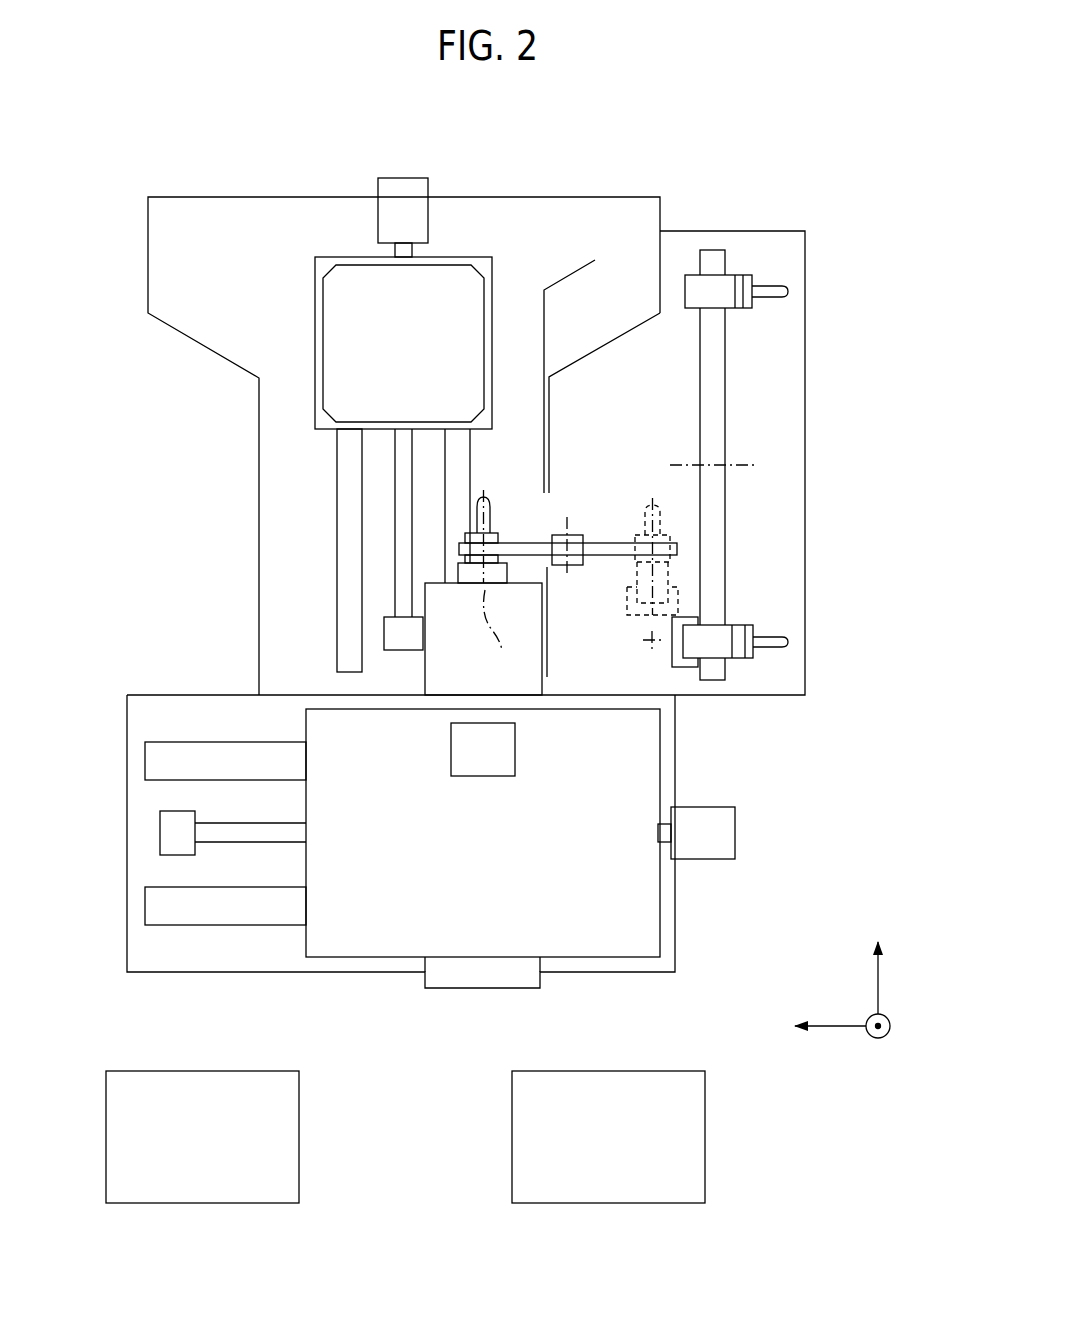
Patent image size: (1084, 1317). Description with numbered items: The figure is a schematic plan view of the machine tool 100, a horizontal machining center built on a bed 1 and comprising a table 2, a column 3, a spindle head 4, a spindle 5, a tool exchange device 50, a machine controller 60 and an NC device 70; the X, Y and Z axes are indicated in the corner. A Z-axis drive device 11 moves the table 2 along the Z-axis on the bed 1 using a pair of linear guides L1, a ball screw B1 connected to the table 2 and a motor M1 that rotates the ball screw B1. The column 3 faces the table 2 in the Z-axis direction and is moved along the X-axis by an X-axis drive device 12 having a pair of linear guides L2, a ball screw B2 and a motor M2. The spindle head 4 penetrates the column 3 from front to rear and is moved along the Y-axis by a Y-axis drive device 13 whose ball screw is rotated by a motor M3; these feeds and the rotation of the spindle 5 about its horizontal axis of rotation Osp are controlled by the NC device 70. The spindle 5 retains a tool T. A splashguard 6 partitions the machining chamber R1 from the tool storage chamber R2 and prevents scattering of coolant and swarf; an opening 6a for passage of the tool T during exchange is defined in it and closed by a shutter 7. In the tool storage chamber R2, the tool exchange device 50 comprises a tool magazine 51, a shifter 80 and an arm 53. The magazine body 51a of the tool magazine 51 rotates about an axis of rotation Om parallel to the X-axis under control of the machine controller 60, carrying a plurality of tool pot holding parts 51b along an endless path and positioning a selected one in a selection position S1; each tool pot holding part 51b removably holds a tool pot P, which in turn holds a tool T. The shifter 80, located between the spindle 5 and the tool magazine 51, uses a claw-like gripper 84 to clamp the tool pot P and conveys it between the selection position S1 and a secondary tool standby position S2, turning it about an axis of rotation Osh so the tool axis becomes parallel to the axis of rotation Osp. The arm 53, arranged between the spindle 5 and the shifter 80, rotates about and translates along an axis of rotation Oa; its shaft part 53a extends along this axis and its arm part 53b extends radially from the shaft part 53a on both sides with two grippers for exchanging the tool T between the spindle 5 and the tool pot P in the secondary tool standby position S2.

The machine tool 100 is at (107, 169).
The bed 1 is at (245, 338).
The table 2 is at (350, 306).
The column 3 is at (348, 937).
The spindle head 4 is at (437, 663).
The spindle 5 is at (460, 572).
The splashguard 6 is at (625, 333).
The opening 6a is at (556, 490).
The shutter 7 is at (555, 288).
The Z-axis drive device 11 is at (410, 172).
The X-axis drive device 12 is at (771, 783).
The Y-axis drive device 13 is at (444, 798).
The tool exchange device 50 is at (838, 692).
The tool magazine 51 is at (781, 465).
The magazine body 51a is at (710, 394).
The tool pot holding part 51b is at (708, 298).
The arm 53 is at (568, 539).
The shaft part 53a is at (560, 563).
The arm part 53b is at (530, 544).
The machine controller 60 is at (300, 1135).
The NC device 70 is at (706, 1135).
The shifter 80 is at (749, 684).
The gripper 84 is at (678, 662).
The motor M1 is at (417, 223).
The motor M2 is at (725, 834).
The motor M3 is at (508, 748).
The ball screw B1 is at (402, 450).
The ball screw B2 is at (178, 833).
The linear guides L1 is at (455, 474).
The linear guides L2 is at (227, 760).
The tool T is at (460, 527).
The tool pot P is at (742, 275).
The machining chamber R1 is at (230, 247).
The tool storage chamber R2 is at (604, 410).
The selection position S1 is at (800, 648).
The secondary tool standby position S2 is at (653, 486).
The axis of rotation Om is at (757, 465).
The axis of rotation Oa is at (569, 530).
The axis of rotation Osp is at (503, 636).
The axis of rotation Osh is at (645, 648).
The X-axis X is at (827, 1028).
The Y-axis Y is at (901, 1048).
The Z-axis Z is at (880, 960).